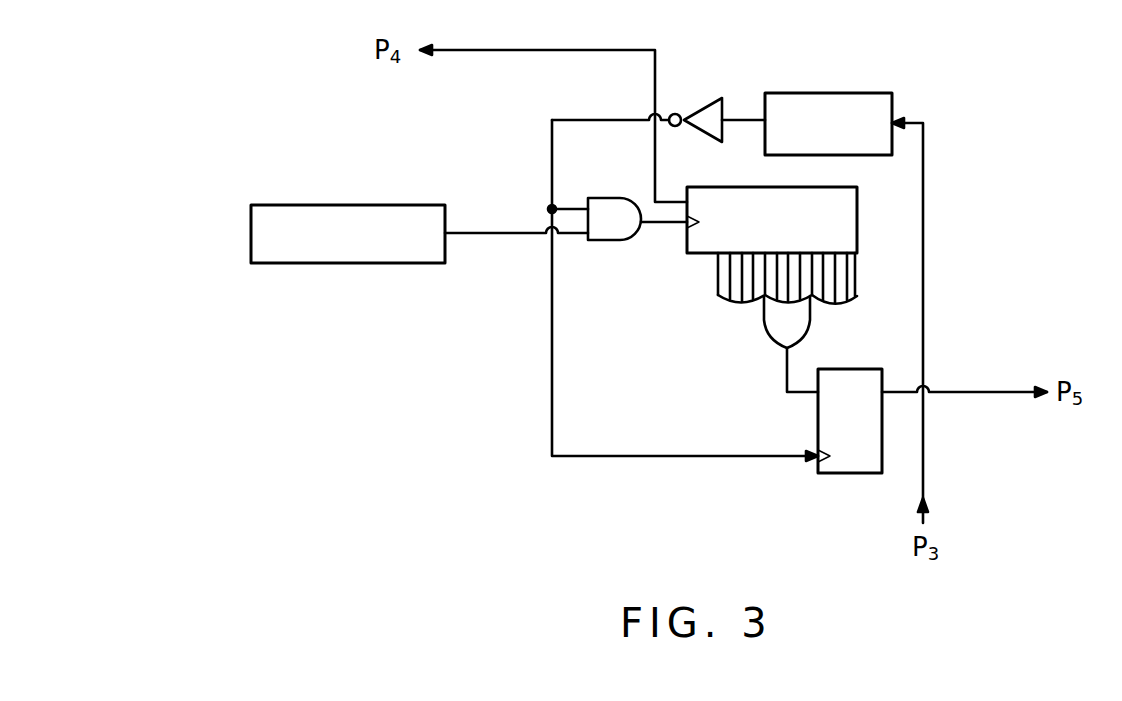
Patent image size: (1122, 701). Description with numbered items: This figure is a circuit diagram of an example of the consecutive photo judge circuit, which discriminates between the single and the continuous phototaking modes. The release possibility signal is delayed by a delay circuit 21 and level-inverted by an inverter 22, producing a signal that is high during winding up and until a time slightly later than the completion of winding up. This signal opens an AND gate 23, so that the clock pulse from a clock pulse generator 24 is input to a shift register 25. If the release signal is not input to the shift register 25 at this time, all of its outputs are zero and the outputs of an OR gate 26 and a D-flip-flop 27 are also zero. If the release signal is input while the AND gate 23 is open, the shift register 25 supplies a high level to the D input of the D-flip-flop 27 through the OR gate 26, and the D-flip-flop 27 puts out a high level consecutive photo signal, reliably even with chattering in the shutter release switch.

The delay circuit 21 is at (838, 93).
The inverter 22 is at (708, 104).
The AND gate 23 is at (612, 240).
The clock pulse generator 24 is at (347, 263).
The shift register 25 is at (857, 218).
The OR gate 26 is at (821, 344).
The D-flip-flop 27 is at (851, 473).